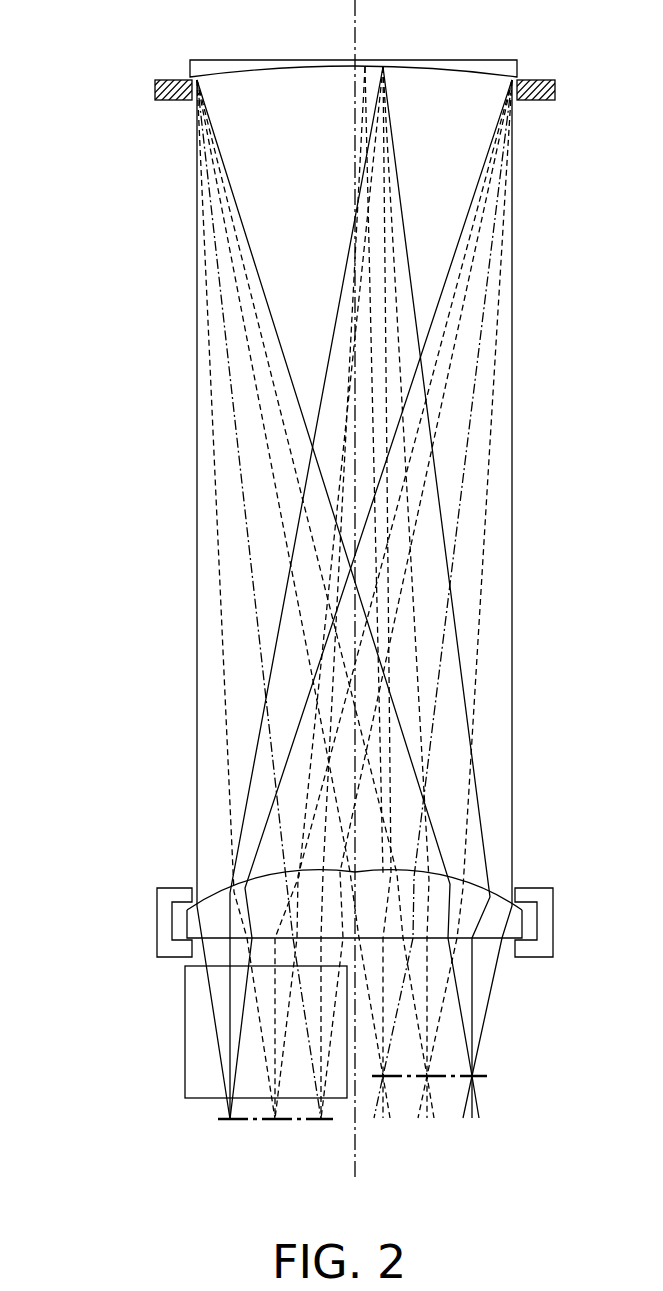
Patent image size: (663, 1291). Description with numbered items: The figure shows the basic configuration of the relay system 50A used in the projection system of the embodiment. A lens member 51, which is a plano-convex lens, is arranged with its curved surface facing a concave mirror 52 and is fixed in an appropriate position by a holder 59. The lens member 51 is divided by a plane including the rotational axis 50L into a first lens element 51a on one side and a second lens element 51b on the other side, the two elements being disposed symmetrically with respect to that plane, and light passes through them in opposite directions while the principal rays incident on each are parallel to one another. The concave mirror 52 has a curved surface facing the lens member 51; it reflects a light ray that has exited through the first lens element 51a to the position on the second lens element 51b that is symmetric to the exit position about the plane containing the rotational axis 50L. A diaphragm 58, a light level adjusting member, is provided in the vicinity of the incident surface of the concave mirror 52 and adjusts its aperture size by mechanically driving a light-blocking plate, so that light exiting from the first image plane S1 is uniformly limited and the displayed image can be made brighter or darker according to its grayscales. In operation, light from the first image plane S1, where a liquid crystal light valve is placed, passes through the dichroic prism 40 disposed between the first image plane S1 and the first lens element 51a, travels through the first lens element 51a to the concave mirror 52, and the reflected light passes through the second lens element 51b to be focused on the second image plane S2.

The relay system 50A is at (122, 291).
The rotational axis 50L is at (358, 23).
The concave mirror 52 is at (503, 66).
The diaphragm 58 is at (177, 80).
The lens member 51 is at (215, 926).
The first lens element 51a is at (209, 907).
The second lens element 51b is at (497, 907).
The holder 59 is at (160, 912).
The dichroic prism 40 is at (198, 1053).
The first image plane S1 is at (266, 1122).
The second image plane S2 is at (455, 1082).